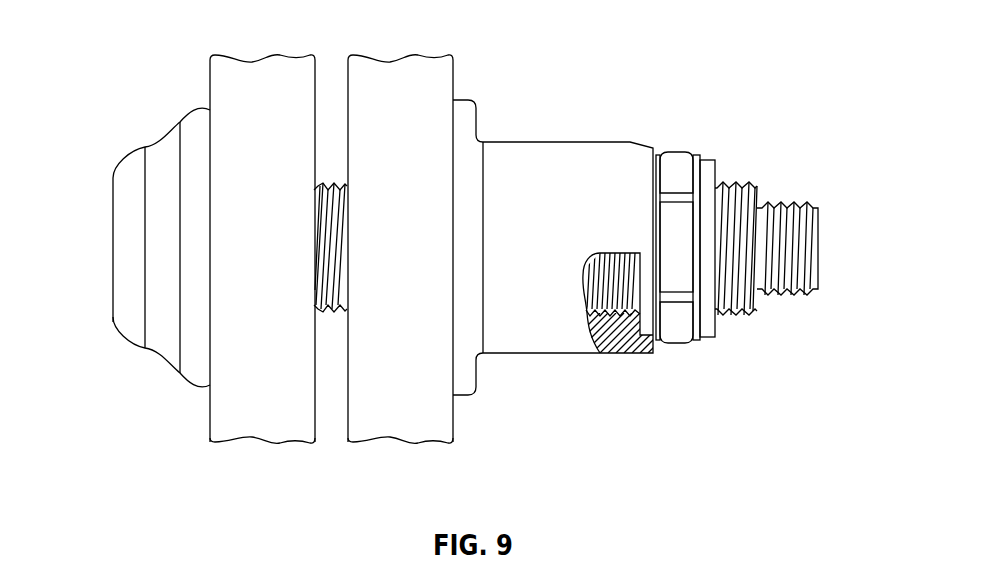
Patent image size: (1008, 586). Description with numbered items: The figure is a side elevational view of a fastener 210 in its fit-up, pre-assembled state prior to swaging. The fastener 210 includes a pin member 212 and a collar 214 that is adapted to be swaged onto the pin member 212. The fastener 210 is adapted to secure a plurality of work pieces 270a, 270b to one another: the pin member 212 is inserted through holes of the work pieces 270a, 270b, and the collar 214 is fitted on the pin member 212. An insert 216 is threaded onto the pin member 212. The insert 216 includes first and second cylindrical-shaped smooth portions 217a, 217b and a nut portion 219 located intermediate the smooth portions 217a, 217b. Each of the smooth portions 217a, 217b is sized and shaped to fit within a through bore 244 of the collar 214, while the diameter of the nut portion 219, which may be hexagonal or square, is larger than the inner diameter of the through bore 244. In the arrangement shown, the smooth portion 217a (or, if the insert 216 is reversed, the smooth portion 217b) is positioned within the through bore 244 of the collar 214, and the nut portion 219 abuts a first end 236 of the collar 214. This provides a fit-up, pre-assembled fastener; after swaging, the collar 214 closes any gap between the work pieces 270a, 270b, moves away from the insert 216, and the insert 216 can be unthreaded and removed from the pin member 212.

The fastener 210 is at (775, 66).
The pin member 212 is at (125, 221).
The collar 214 is at (553, 153).
The insert 216 is at (691, 233).
The first cylindrical-shaped smooth portion 217a is at (630, 325).
The second cylindrical-shaped smooth portion 217b is at (710, 323).
The nut portion 219 is at (688, 337).
The first end 236 is at (664, 181).
The through bore 244 is at (633, 272).
The work piece 270a is at (260, 412).
The work piece 270b is at (385, 402).